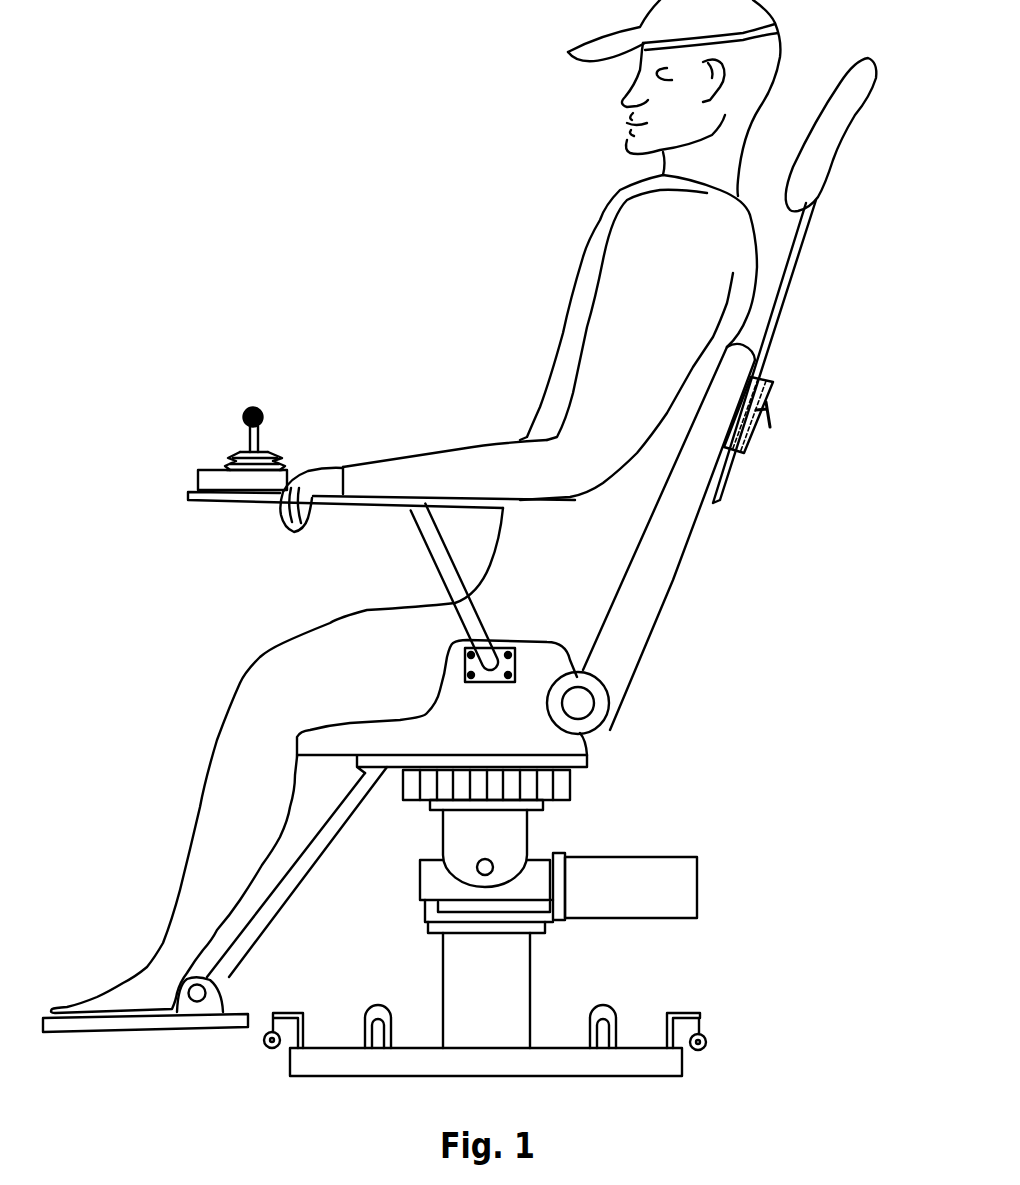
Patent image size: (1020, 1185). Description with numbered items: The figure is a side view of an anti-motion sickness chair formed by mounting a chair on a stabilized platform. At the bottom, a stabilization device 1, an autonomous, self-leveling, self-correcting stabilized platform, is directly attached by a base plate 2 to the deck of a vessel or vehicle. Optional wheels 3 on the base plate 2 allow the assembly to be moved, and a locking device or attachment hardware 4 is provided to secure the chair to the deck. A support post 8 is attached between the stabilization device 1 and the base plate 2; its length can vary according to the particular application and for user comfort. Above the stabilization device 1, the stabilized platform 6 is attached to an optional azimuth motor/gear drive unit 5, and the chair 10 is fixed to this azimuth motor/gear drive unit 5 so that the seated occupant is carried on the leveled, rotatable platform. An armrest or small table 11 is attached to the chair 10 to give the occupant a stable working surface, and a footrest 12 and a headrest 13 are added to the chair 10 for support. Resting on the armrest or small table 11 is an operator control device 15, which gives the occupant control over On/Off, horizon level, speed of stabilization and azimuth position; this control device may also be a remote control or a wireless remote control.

The stabilization device 1 is at (640, 838).
The base plate 2 is at (607, 1070).
The wheels 3 is at (263, 1042).
The locking device or attachment hardware 4 is at (380, 1008).
The azimuth motor/gear drive unit 5 is at (560, 778).
The stabilized platform 6 is at (430, 807).
The support post 8 is at (530, 960).
The chair 10 is at (648, 689).
The armrest or small table 11 is at (413, 508).
The footrest 12 is at (72, 1027).
The headrest 13 is at (826, 147).
The operator control device 15 is at (263, 415).